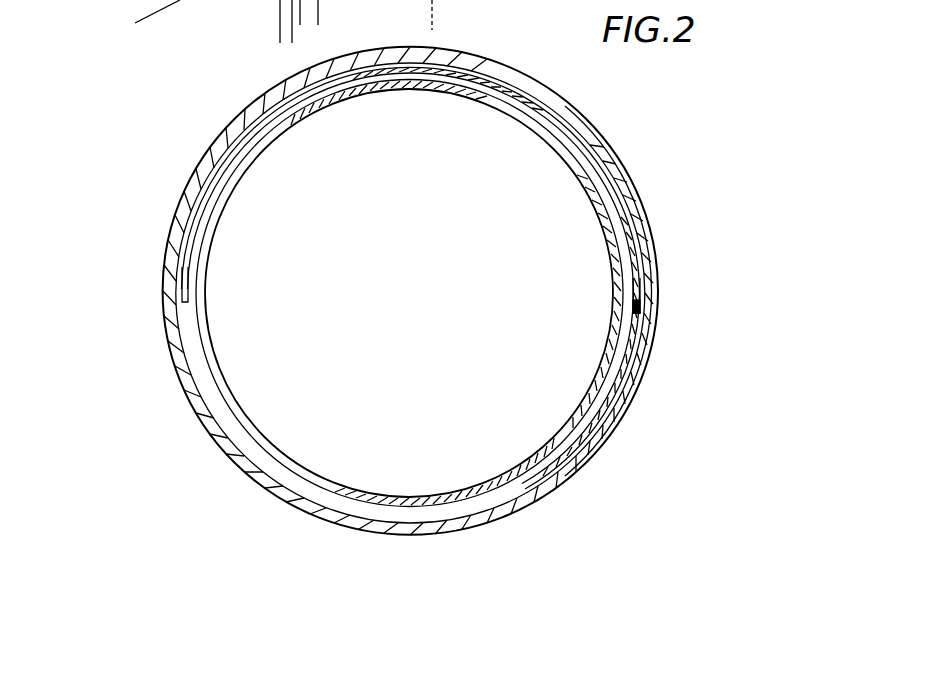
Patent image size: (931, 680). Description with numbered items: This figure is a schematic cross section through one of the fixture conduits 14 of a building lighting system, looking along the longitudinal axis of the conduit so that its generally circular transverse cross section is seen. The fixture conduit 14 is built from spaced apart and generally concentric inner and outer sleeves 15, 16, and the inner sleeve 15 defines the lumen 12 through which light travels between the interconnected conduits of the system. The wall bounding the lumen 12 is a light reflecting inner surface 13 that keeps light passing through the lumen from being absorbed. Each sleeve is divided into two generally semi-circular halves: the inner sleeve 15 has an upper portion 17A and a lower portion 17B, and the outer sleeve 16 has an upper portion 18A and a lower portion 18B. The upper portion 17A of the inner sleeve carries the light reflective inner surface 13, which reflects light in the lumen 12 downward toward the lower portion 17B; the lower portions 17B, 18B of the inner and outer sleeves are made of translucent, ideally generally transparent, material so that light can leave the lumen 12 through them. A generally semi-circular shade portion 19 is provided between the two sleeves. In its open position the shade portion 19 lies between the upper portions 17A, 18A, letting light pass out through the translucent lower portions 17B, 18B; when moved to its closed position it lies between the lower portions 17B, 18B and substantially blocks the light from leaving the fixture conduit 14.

The lumen 12 is at (250, 348).
The light reflecting inner surface 13 is at (628, 250).
The fixture conduit 14 is at (650, 186).
The inner sleeve 15 is at (622, 367).
The outer sleeve 16 is at (627, 407).
The upper portion of inner sleeve 17A is at (484, 95).
The lower portion of inner sleeve 17B is at (587, 118).
The upper portion of outer sleeve 18A is at (546, 444).
The lower portion of outer sleeve 18B is at (556, 479).
The shade portion 19 is at (215, 168).